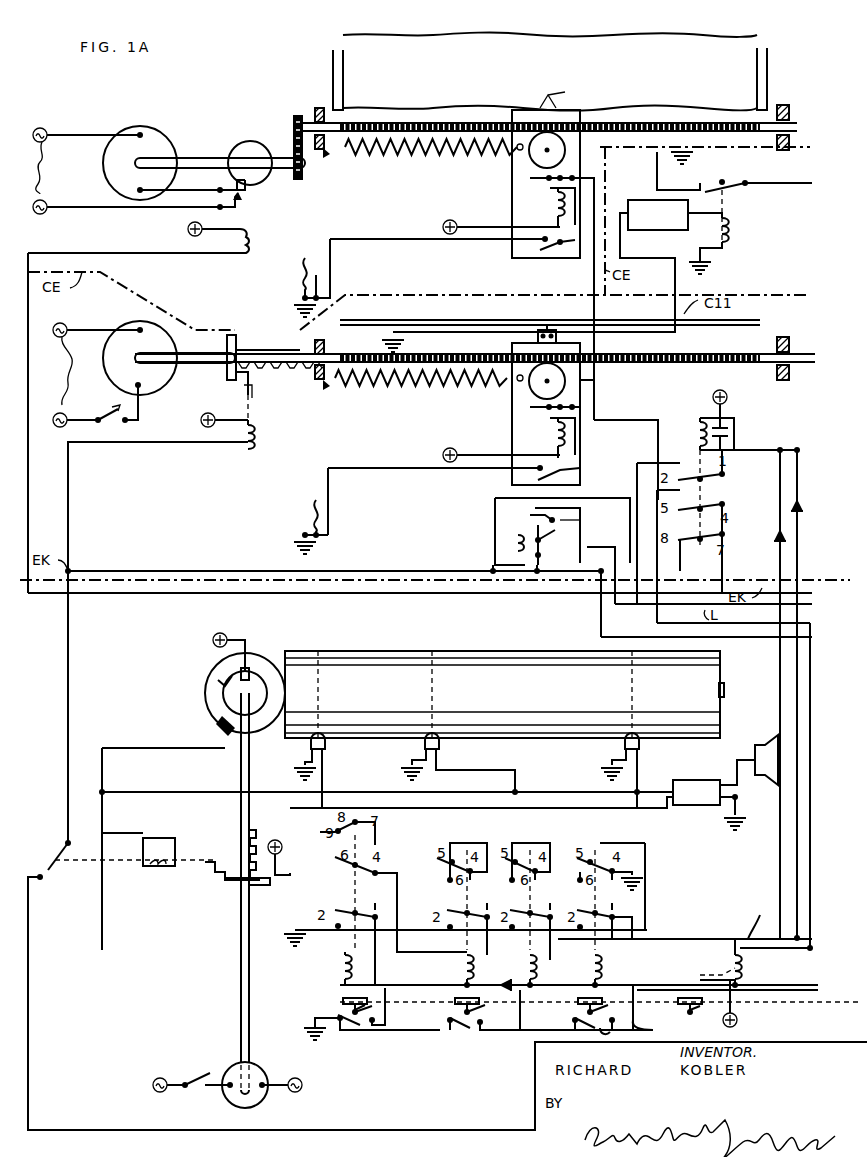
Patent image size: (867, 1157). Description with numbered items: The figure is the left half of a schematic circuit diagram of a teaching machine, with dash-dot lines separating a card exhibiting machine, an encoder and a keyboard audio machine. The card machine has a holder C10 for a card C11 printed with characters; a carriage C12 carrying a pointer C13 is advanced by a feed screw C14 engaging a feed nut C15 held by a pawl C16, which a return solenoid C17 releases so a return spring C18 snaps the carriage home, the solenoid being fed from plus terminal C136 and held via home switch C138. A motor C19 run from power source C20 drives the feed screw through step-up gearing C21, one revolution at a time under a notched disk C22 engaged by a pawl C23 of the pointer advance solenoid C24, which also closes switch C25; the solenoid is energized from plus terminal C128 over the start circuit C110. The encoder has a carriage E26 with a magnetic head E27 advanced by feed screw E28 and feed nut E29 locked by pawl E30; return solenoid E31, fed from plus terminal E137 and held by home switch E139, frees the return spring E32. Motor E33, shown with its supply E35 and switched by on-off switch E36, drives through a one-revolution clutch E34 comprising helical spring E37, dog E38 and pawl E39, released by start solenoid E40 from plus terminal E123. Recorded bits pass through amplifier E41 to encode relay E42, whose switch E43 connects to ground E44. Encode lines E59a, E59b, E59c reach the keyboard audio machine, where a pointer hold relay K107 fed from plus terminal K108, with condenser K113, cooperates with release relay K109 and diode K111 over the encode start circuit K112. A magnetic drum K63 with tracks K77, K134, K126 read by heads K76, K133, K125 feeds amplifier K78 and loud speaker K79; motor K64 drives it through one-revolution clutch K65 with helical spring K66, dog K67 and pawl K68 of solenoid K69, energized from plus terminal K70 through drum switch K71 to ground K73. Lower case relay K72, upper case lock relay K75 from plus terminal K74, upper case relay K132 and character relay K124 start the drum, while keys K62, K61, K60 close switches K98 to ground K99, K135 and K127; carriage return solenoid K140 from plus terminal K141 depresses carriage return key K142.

The holder C10 is at (767, 88).
The card C11 is at (420, 108).
The carriage C12 is at (590, 140).
The pointer C13 is at (570, 93).
The feed screw C14 is at (675, 142).
The feed nut C15 is at (535, 158).
The pawl C16 is at (530, 182).
The return solenoid C17 is at (548, 210).
The return spring C18 is at (412, 160).
The motor C19 is at (195, 112).
The power source C20 is at (128, 171).
The step-up gearing C21 is at (299, 114).
The notched disk C22 is at (270, 125).
The pawl C23 is at (250, 186).
The pointer advance solenoid C24 is at (250, 233).
The switch C25 is at (222, 190).
The plus terminal C128 is at (188, 229).
The plus terminal C136 is at (455, 212).
The home switch C138 is at (309, 250).
The start circuit C110 is at (378, 600).
The magnetic head E27 is at (556, 306).
The feed screw E28 is at (696, 356).
The feed nut E29 is at (530, 392).
The carriage E26 is at (595, 381).
The pawl E30 is at (589, 407).
The return solenoid E31 is at (576, 432).
The return spring E32 is at (386, 390).
The motor E33 is at (140, 330).
The one-revolution clutch E34 is at (256, 344).
The power source E35 is at (90, 375).
The on-off control switch E36 is at (120, 418).
The helical spring E37 is at (251, 370).
The dog E38 is at (232, 335).
The pawl E39 is at (252, 394).
The start solenoid E40 is at (266, 428).
The amplifier E41 is at (674, 232).
The encode relay E42 is at (742, 238).
The switch E43 is at (744, 179).
The ground E44 is at (690, 162).
The plus terminal E123 is at (206, 414).
The plus terminal E137 is at (455, 440).
The home switch E139 is at (296, 490).
The encode line E59a is at (795, 964).
The encode line E59b is at (677, 983).
The encode line E59c is at (752, 925).
The pointer hold relay K107 is at (700, 418).
The plus terminal K108 is at (725, 392).
The release relay K109 is at (495, 540).
The diode K111 is at (540, 554).
The condenser K113 is at (734, 428).
The plus terminal K70 is at (213, 640).
The drum switch K71 is at (258, 664).
The ground K73 is at (296, 928).
The magnetic drum K63 is at (500, 742).
The track K77 is at (400, 697).
The track K134 is at (530, 697).
The track K126 is at (700, 697).
The magnetic head K76 is at (308, 746).
The magnetic head K133 is at (426, 746).
The head K125 is at (622, 744).
The amplifier K78 is at (682, 780).
The loud speaker K79 is at (768, 785).
The encode start circuit K112 is at (66, 814).
The solenoid K69 is at (174, 868).
The pawl K68 is at (228, 848).
The helical spring K66 is at (240, 834).
The one-revolution clutch K65 is at (250, 845).
The dog K67 is at (254, 885).
The plus terminal K74 is at (282, 856).
The lower case relay K72 is at (343, 968).
The upper case lock relay K75 is at (444, 970).
The upper case relay K132 is at (513, 970).
The character relay K124 is at (583, 966).
The carriage return solenoid K140 is at (733, 964).
The plus terminal K141 is at (737, 1020).
The carriage return key K142 is at (684, 1012).
The key lever switch K127 is at (651, 1018).
The lower case shift key K62 is at (342, 1000).
The upper case shift key K61 is at (454, 1004).
The e key K60 is at (578, 1018).
The ground K99 is at (322, 1036).
The key switch K98 is at (370, 1026).
The switch K135 is at (462, 1026).
The motor K64 is at (235, 1100).